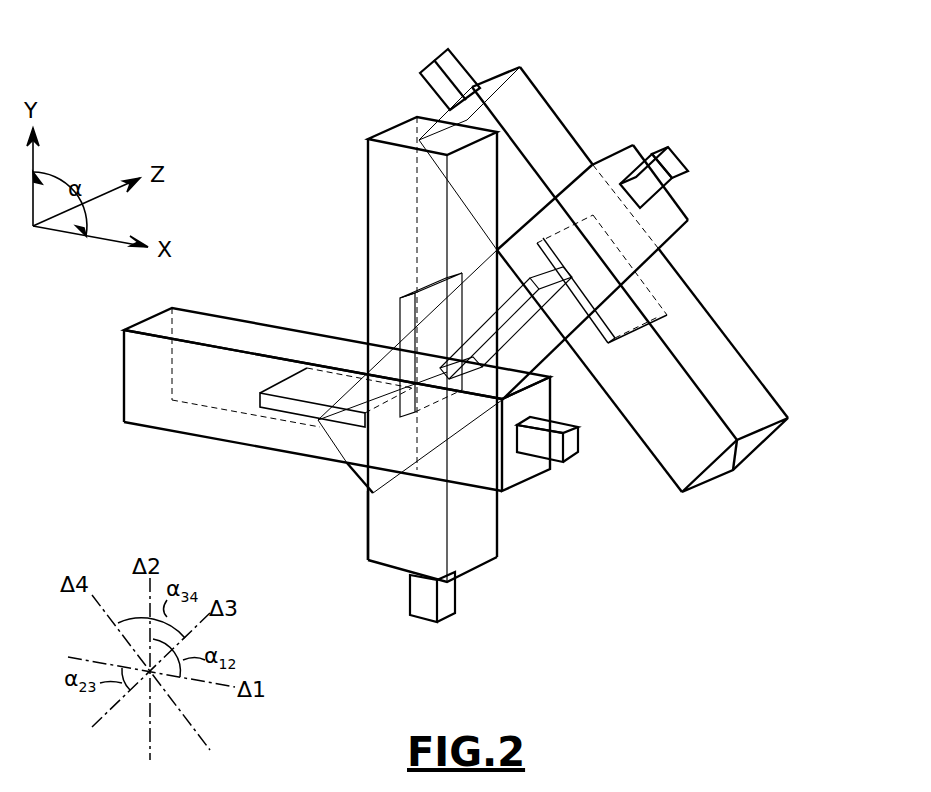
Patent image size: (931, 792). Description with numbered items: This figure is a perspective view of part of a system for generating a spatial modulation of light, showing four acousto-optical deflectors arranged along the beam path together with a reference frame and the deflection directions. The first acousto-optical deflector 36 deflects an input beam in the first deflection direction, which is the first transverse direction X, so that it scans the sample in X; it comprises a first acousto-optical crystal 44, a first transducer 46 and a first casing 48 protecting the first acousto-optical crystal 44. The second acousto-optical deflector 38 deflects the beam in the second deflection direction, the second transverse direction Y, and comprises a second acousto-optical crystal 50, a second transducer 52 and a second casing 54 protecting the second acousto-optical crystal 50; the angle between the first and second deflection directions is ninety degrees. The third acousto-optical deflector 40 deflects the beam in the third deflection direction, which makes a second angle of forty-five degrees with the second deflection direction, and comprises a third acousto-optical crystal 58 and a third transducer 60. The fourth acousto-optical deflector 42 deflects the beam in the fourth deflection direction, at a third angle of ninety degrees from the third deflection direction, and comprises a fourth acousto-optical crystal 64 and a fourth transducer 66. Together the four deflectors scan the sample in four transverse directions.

The first acousto-optical deflector 36 is at (208, 320).
The second acousto-optical deflector 38 is at (372, 200).
The third acousto-optical deflector 40 is at (668, 208).
The fourth acousto-optical deflector 42 is at (483, 160).
The first acousto-optical crystal 44 is at (300, 378).
The first transducer 46 is at (540, 455).
The first casing 48 is at (178, 405).
The second acousto-optical crystal 50 is at (455, 385).
The second transducer 52 is at (443, 600).
The second casing 54 is at (378, 540).
The third acousto-optical crystal 58 is at (572, 343).
The third transducer 60 is at (660, 170).
The fourth acousto-optical crystal 64 is at (645, 298).
The fourth transducer 66 is at (432, 68).